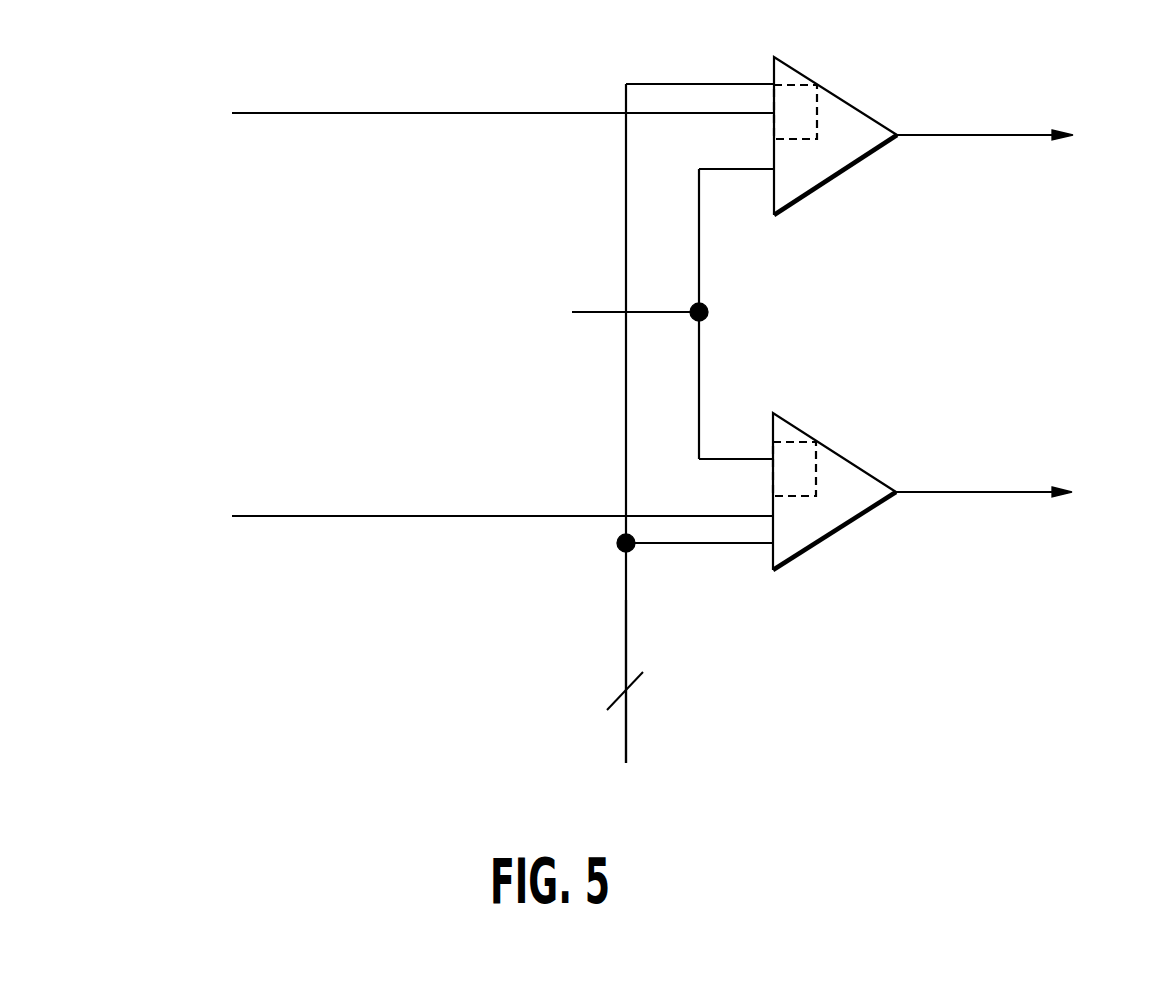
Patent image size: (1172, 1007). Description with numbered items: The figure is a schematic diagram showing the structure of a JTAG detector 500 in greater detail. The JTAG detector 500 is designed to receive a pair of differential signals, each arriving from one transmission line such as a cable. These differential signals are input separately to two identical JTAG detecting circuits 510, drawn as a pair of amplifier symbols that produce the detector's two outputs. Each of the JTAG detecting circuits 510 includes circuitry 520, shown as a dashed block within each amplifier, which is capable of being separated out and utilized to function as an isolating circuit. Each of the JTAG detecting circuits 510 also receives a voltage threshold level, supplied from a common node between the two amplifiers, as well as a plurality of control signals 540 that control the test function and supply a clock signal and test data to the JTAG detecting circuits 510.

The JTAG detector 500 is at (419, 667).
The JTAG detecting circuit 510 is at (840, 110).
The circuitry 520 is at (802, 128).
The control signals 540 is at (626, 645).